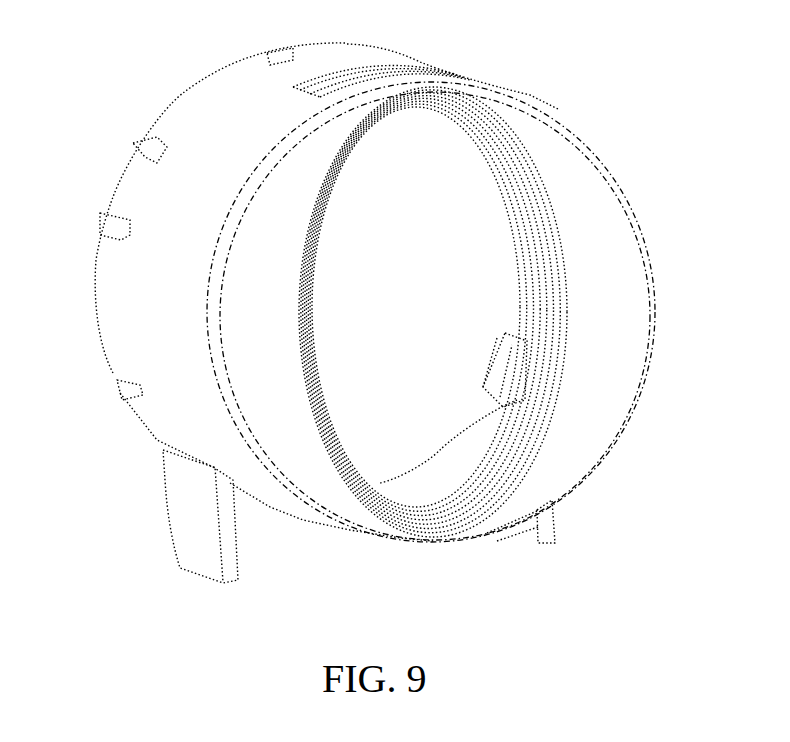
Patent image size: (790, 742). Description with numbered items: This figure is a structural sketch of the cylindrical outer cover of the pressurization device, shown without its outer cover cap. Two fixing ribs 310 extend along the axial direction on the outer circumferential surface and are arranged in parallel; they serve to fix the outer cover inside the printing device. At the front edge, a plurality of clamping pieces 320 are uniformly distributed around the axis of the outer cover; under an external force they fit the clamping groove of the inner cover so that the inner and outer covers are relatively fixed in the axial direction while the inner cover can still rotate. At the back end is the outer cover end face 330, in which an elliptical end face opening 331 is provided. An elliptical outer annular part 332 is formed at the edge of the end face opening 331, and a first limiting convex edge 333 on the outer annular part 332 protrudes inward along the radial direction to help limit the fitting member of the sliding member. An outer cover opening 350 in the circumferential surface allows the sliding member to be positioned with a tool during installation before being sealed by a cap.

The fixing rib 310 is at (187, 513).
The clamping piece 320 is at (130, 190).
The outer cover end face 330 is at (572, 163).
The end face opening 331 is at (433, 142).
The outer annular part 332 is at (530, 430).
The first limiting convex edge 333 is at (530, 370).
The outer cover opening 350 is at (330, 92).